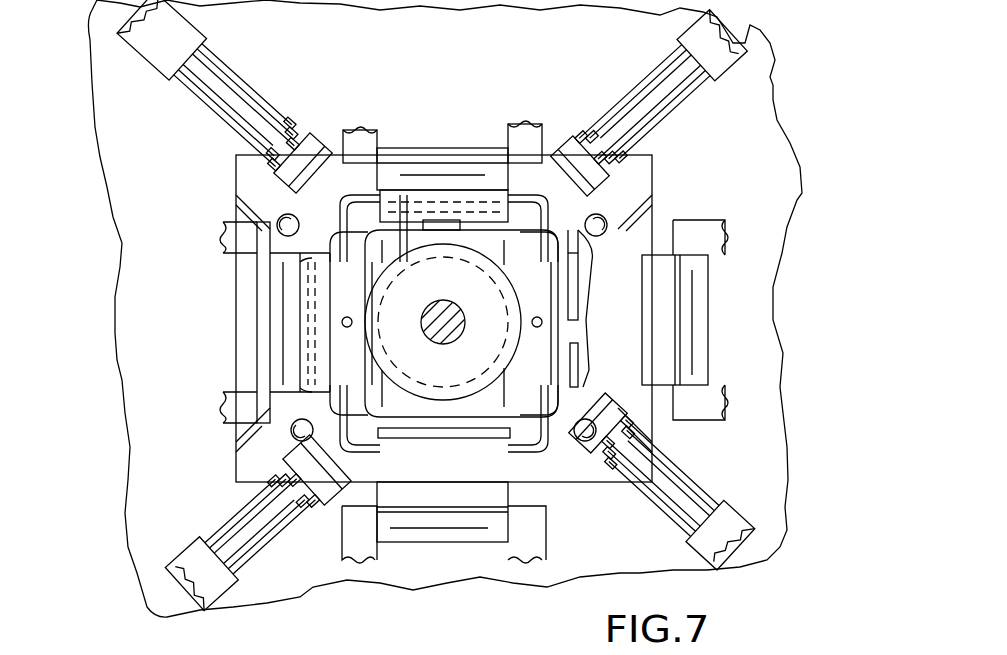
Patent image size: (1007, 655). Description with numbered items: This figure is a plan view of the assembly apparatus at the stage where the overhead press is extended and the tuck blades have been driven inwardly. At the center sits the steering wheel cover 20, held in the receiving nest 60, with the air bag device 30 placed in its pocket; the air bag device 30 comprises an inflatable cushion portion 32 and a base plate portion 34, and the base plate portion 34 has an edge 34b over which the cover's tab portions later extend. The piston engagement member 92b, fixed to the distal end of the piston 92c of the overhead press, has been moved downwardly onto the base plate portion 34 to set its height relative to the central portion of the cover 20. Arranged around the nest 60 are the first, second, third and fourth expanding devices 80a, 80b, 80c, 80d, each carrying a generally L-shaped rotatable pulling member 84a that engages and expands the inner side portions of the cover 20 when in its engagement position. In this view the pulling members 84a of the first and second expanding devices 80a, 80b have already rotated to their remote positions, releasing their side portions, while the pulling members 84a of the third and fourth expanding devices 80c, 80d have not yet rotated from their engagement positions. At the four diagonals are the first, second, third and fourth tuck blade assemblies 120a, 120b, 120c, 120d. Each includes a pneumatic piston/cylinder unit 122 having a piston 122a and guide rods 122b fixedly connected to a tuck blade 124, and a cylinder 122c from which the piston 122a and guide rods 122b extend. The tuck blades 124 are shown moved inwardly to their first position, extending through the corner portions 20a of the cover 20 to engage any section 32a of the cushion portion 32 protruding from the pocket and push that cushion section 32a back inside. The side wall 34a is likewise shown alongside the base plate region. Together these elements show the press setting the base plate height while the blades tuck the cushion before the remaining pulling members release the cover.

The steering wheel cover 20 is at (590, 308).
The corner portion 20a is at (548, 205).
The air bag device 30 is at (418, 188).
The cushion portion 32 is at (330, 362).
The cushion portion section 32a is at (508, 195).
The base plate portion 34 is at (392, 235).
The side wall 34a is at (565, 336).
The base plate portion edge 34b is at (580, 390).
The receiving nest 60 is at (645, 178).
The first expanding device 80a is at (738, 300).
The second expanding device 80b is at (434, 553).
The third expanding device 80c is at (182, 298).
The fourth expanding device 80d is at (477, 117).
The pulling member 84a is at (440, 172).
The piston engagement member 92b is at (490, 298).
The piston 92c is at (445, 345).
The first tuck blade assembly 120a is at (712, 456).
The second tuck blade assembly 120b is at (229, 504).
The third tuck blade assembly 120c is at (250, 62).
The fourth tuck blade assembly 120d is at (637, 66).
The pneumatic piston/cylinder unit 122 is at (135, 57).
The piston 122a is at (672, 492).
The guide rods 122b is at (665, 505).
The cylinder 122c is at (775, 67).
The tuck blade 124 is at (335, 215).